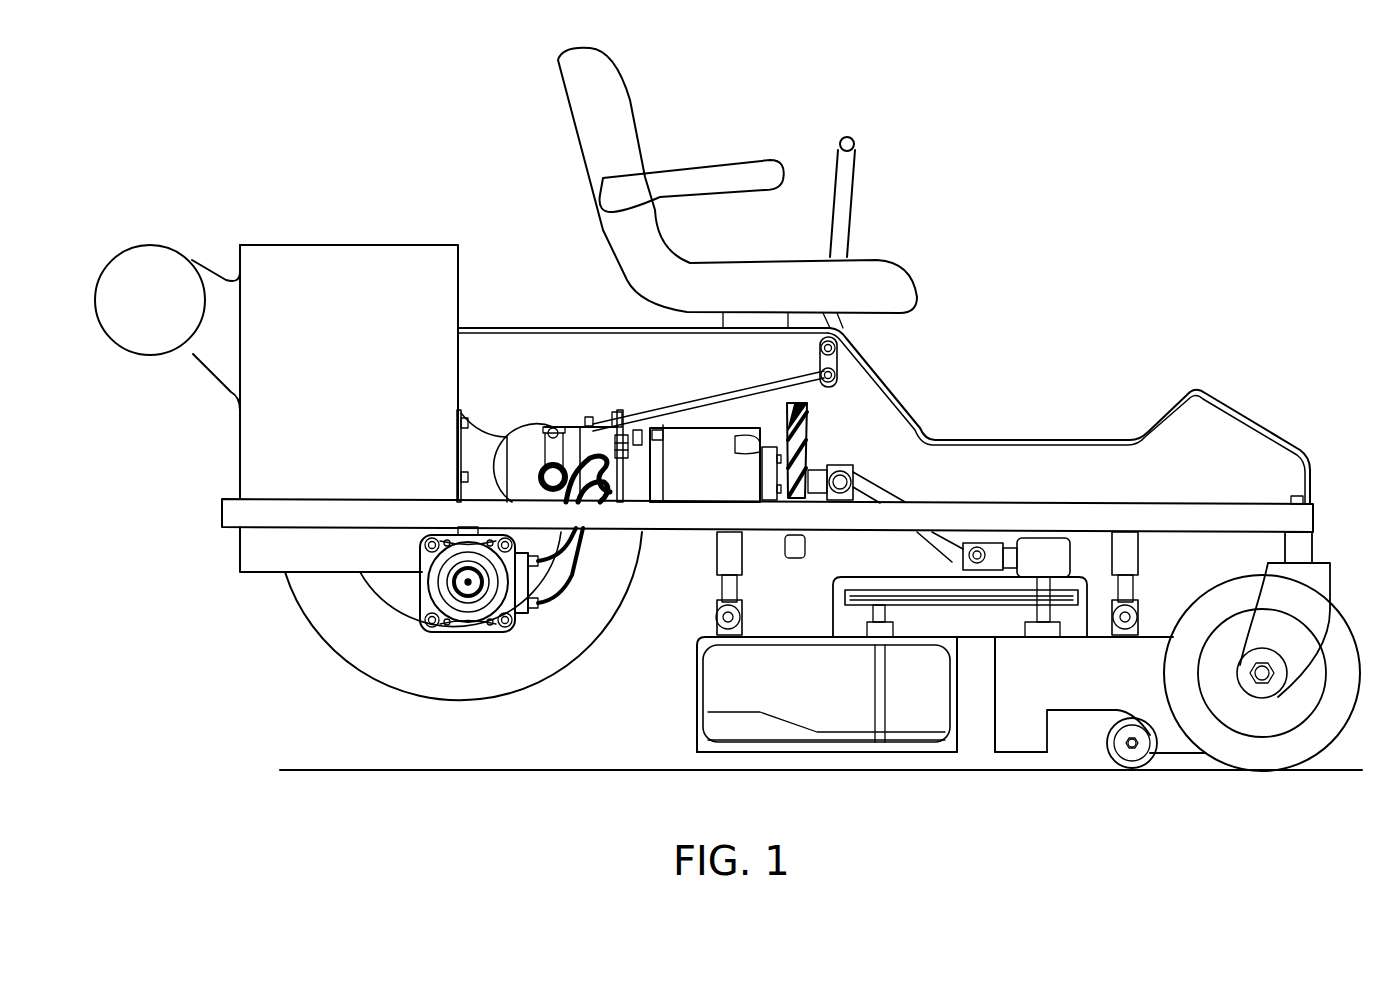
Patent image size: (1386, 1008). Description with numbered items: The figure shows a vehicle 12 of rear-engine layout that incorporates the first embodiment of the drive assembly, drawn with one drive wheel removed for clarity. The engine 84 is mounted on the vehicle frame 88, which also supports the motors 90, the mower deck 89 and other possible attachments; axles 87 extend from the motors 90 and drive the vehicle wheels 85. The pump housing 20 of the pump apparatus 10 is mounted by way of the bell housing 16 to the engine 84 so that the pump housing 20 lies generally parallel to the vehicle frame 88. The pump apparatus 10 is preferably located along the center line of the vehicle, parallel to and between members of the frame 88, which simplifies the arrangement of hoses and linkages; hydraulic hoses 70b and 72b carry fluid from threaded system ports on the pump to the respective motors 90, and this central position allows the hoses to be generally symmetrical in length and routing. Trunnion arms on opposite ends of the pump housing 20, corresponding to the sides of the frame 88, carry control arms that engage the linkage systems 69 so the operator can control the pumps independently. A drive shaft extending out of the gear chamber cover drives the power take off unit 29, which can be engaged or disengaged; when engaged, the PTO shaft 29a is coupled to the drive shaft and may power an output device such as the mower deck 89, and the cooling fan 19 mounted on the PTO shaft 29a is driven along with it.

The pump apparatus 10 is at (574, 408).
The vehicle 12 is at (1092, 130).
The bell housing 16 is at (482, 458).
The cooling fan 19 is at (802, 462).
The pump housing 20 is at (533, 457).
The power take off unit 29 is at (689, 476).
The PTO shaft 29a is at (779, 500).
The linkage systems 69 is at (760, 385).
The hydraulic hose 70b is at (548, 608).
The hydraulic hose 72b is at (548, 568).
The engine 84 is at (338, 385).
The vehicle wheels 85 is at (338, 673).
The axles 87 is at (468, 592).
The vehicle frame 88 is at (1203, 520).
The mower deck 89 is at (1066, 683).
The motors 90 is at (424, 592).